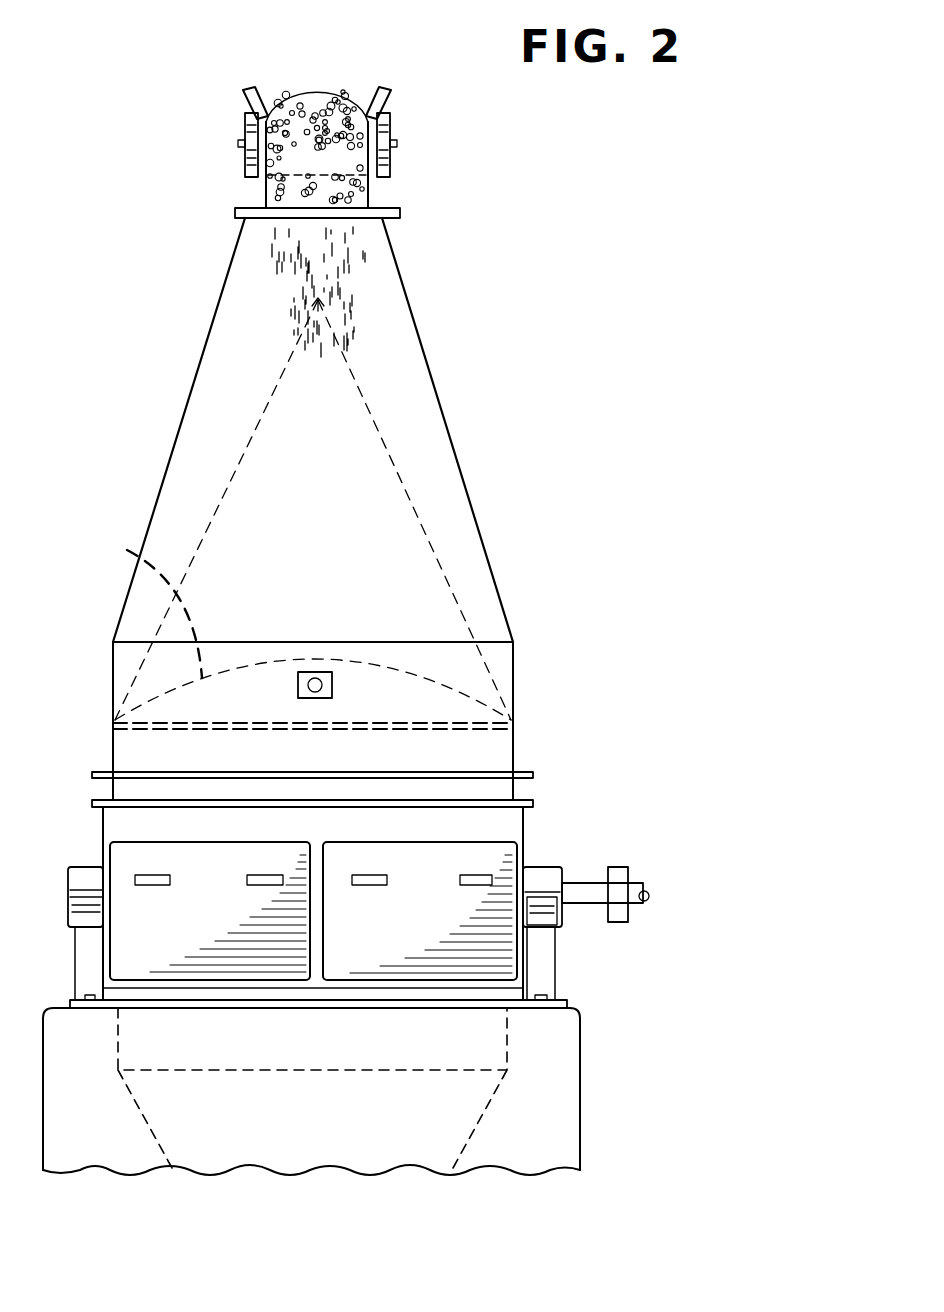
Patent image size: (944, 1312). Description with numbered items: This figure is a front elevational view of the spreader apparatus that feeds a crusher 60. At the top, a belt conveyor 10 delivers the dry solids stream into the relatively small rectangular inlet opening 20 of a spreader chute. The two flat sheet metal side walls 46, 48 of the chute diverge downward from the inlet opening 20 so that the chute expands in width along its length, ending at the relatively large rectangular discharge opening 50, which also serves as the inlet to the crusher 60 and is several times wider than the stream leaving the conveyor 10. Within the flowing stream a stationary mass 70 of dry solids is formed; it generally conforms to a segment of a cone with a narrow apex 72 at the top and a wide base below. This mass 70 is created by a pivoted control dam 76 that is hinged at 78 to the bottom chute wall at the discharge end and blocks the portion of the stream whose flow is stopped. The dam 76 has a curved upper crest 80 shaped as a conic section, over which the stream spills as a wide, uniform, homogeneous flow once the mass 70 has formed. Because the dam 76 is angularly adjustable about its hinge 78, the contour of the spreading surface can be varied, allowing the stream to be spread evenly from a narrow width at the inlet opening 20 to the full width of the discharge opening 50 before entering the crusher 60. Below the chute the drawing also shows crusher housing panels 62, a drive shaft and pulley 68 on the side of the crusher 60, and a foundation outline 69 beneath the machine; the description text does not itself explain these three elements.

The belt conveyor 10 is at (391, 99).
The inlet opening 20 is at (373, 212).
The apex 72 is at (326, 300).
The side wall 48 is at (183, 405).
The side wall 46 is at (455, 446).
The stationary mass 70 is at (325, 545).
The hinge 78 is at (115, 718).
The control dam 76 is at (430, 712).
The curved upper crest 80 is at (127, 550).
The discharge opening 50 is at (135, 772).
The crusher 60 is at (537, 820).
The access door panels 62 is at (497, 963).
The drive shaft and pulley 68 is at (590, 903).
The foundation / pit outline 69 is at (480, 1118).